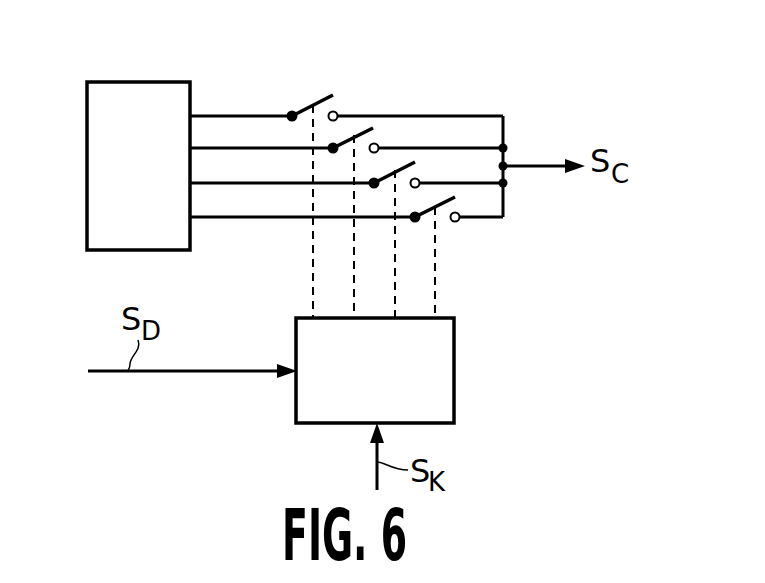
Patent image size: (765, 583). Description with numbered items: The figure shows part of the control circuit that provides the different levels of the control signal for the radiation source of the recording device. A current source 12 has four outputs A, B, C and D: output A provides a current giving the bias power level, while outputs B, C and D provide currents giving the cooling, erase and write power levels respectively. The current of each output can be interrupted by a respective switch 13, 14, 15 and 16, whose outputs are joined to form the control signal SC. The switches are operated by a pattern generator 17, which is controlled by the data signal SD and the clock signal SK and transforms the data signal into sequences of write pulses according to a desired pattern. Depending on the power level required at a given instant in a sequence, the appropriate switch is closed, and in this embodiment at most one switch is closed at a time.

The current source 12 is at (122, 82).
The switch 13 is at (318, 94).
The switch 14 is at (359, 133).
The switch 15 is at (399, 168).
The switch 16 is at (440, 205).
The pattern generator 17 is at (454, 368).